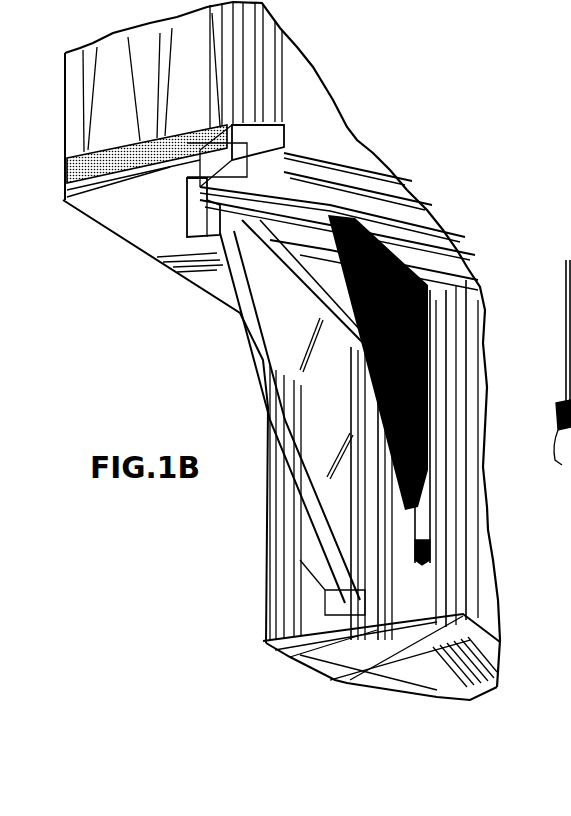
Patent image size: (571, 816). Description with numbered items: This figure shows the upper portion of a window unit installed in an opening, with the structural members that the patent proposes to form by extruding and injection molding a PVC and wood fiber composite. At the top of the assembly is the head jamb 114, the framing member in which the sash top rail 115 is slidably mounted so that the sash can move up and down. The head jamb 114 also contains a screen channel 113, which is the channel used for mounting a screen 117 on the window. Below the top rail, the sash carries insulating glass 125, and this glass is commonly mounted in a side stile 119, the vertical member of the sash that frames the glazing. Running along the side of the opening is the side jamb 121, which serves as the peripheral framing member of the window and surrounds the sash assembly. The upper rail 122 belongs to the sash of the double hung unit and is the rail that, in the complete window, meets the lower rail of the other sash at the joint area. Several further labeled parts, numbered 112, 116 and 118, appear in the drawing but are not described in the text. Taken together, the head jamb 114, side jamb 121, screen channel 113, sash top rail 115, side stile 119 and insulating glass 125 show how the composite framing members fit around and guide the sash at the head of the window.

The ribbed top panel 112 is at (178, 142).
The screen channel 113 is at (303, 160).
The head jamb 114 is at (398, 178).
The sash top rail 115 is at (383, 205).
The third layer 116 is at (413, 240).
The screen 117 is at (390, 257).
The fifth layer 118 is at (427, 277).
The side stile 119 is at (367, 458).
The side jamb 121 is at (465, 652).
The upper rail 122 is at (570, 463).
The insulating glass 125 is at (330, 473).